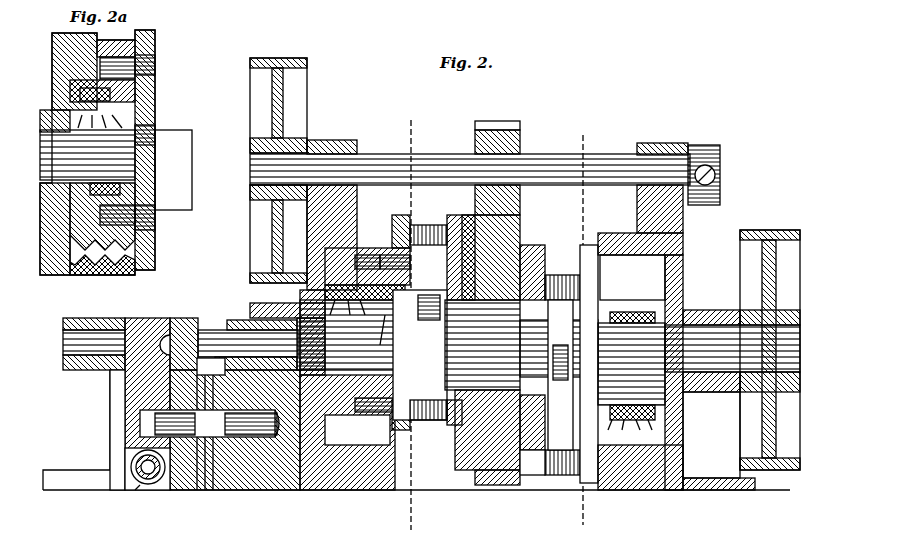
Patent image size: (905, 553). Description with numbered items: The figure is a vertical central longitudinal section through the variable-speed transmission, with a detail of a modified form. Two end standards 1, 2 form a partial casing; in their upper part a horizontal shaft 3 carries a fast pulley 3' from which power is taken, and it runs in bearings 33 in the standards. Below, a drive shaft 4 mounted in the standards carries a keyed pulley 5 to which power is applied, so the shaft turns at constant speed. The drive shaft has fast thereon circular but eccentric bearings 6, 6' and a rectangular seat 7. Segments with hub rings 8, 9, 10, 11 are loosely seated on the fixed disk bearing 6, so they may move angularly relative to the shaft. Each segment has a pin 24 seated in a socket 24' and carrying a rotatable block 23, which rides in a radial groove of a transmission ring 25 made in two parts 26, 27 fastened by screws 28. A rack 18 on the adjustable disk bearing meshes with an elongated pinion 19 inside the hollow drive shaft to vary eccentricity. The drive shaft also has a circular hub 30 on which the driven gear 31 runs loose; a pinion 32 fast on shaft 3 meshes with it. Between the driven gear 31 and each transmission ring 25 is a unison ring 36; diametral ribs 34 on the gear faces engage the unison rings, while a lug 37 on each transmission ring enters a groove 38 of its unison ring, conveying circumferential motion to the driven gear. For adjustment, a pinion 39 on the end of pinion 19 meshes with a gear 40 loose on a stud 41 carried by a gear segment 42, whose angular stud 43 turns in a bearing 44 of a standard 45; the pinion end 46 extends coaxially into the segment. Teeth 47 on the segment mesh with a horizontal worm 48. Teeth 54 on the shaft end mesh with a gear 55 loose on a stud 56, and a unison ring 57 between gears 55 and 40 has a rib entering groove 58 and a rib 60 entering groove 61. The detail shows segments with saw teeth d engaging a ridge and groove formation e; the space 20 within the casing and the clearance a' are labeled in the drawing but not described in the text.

In FIG. 2, the end standard 1 is at (345, 204).
In FIG. 2, the end standard 2 is at (645, 208).
In FIG. 2, the horizontal shaft 3 is at (528, 243).
In FIG. 2, the pulley 3' is at (266, 170).
In FIG. 2, the drive shaft 4 is at (407, 526).
In FIG. 2, the pulley 5 is at (768, 233).
In FIG. 2A, the circular eccentric bearing 6 is at (107, 137).
In FIG. 2, the circular eccentric bearing 6 is at (327, 327).
In FIG. 2, the circular eccentric bearing 6' is at (653, 370).
In FIG. 2A, the rectangular seat 7 is at (172, 140).
In FIG. 2, the rectangular seat 7 is at (420, 355).
In FIG. 2A, the ring 8 is at (120, 129).
In FIG. 2A, the ring 9 is at (108, 129).
In FIG. 2A, the ring 10 is at (97, 129).
In FIG. 2A, the ring 11 is at (81, 129).
In FIG. 2, the rack 18 is at (440, 312).
In FIG. 2, the elongated pinion 19 is at (560, 366).
In FIG. 2, the chamber 20 is at (378, 440).
In FIG. 2, the block 23 is at (400, 225).
In FIG. 2A, the pin 24 is at (143, 147).
In FIG. 2, the pin 24 is at (367, 324).
In FIG. 2, the socket 24' is at (364, 318).
In FIG. 2, the transmission ring 25 is at (428, 228).
In FIG. 2, the part of transmission ring 26 is at (415, 435).
In FIG. 2, the part of transmission ring 27 is at (446, 420).
In FIG. 2, the screw 28 is at (425, 400).
In FIG. 2, the circular hub 30 is at (505, 335).
In FIG. 2, the driven gear 31 is at (492, 470).
In FIG. 2, the pinion 32 is at (496, 123).
In FIG. 2, the bearing 33 is at (332, 140).
In FIG. 2, the diametral rib 34 is at (462, 260).
In FIG. 2, the unison ring 36 is at (454, 250).
In FIG. 2, the lug 37 is at (548, 272).
In FIG. 2, the groove 38 is at (530, 465).
In FIG. 2, the pinion 39 is at (188, 330).
In FIG. 2, the gear 40 is at (160, 480).
In FIG. 2, the stud 41 is at (143, 425).
In FIG. 2, the gear segment 42 is at (145, 403).
In FIG. 2, the angular stud 43 is at (132, 330).
In FIG. 2, the bearing 44 is at (85, 325).
In FIG. 2, the standard 45 is at (118, 393).
In FIG. 2, the end of pinion 46 is at (162, 340).
In FIG. 2, the teeth 47 is at (140, 455).
In FIG. 2, the worm 48 is at (140, 485).
In FIG. 2, the teeth 54 is at (235, 325).
In FIG. 2, the gear 55 is at (240, 478).
In FIG. 2, the stud 56 is at (268, 425).
In FIG. 2, the unison ring 57 is at (210, 478).
In FIG. 2, the diametral groove 58 is at (220, 478).
In FIG. 2, the diametral rib 60 is at (195, 478).
In FIG. 2, the groove 61 is at (180, 478).
In FIG. 2, the clearance a' is at (339, 424).
In FIG. 2A, the saw teeth d is at (105, 50).
In FIG. 2A, the ridge and groove formation e is at (80, 55).